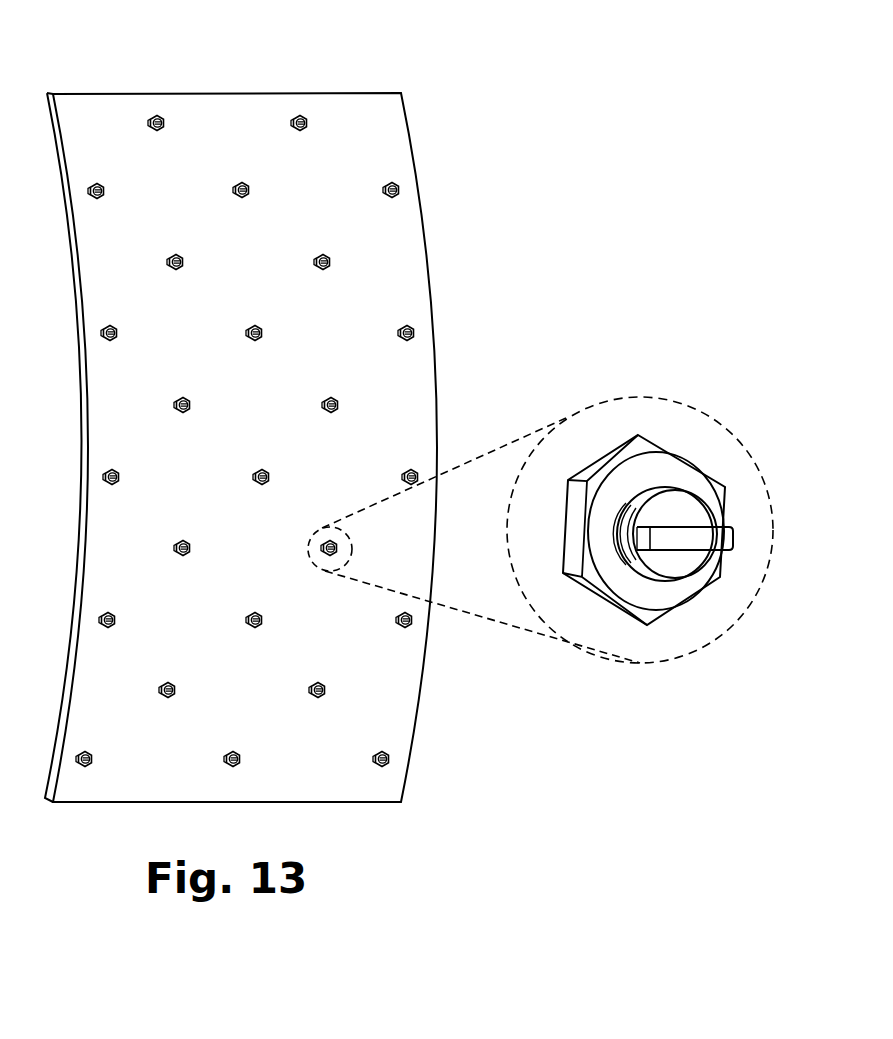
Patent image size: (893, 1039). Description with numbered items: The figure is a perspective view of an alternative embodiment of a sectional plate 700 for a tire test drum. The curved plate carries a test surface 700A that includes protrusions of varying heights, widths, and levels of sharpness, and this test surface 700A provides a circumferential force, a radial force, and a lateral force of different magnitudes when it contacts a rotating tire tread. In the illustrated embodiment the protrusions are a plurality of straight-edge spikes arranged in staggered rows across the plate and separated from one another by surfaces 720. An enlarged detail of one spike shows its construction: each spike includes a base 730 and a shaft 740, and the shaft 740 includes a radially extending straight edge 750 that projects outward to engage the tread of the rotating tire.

The sectional plate 700 is at (283, 404).
The test surface 700A is at (408, 197).
The surface 720 is at (297, 447).
The base 730 is at (600, 590).
The shaft 740 is at (688, 508).
The straight edge 750 is at (722, 542).